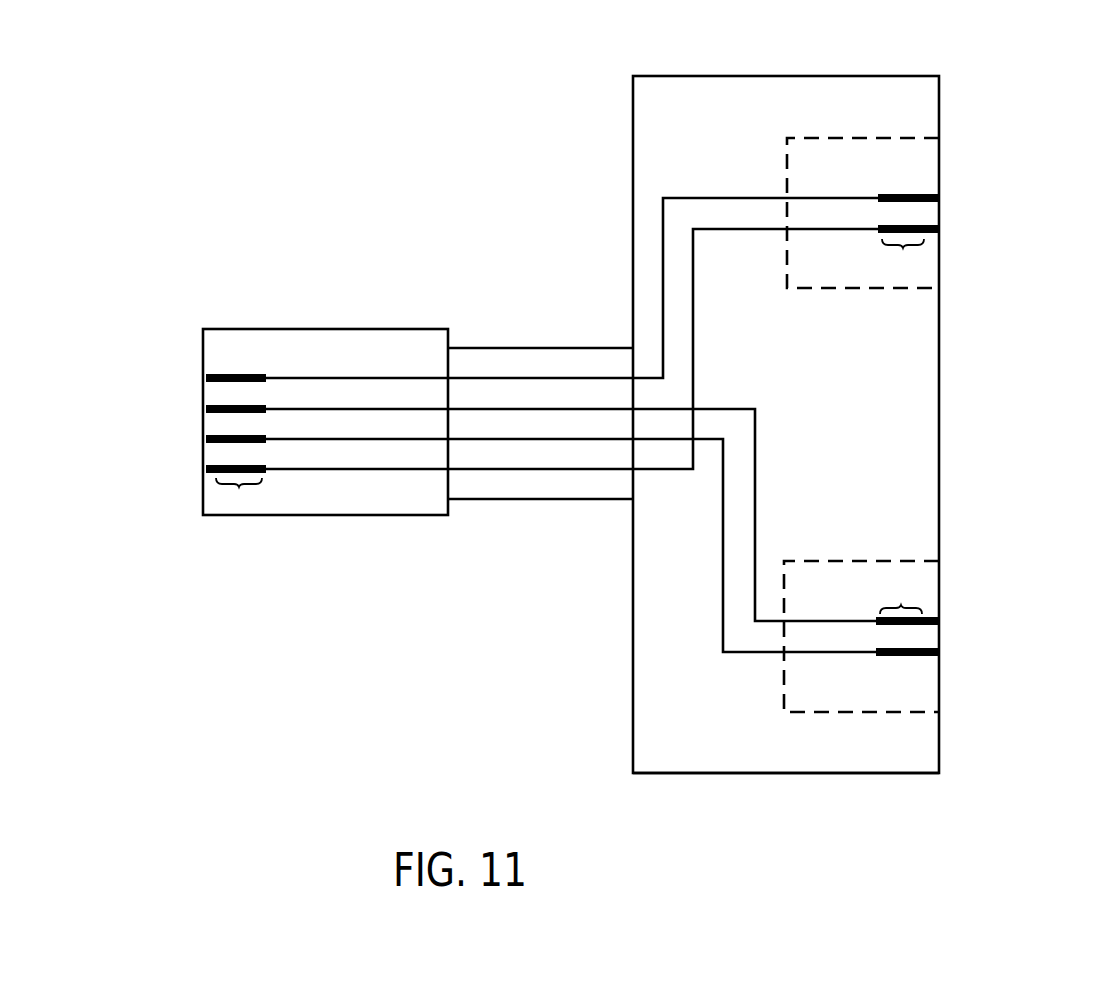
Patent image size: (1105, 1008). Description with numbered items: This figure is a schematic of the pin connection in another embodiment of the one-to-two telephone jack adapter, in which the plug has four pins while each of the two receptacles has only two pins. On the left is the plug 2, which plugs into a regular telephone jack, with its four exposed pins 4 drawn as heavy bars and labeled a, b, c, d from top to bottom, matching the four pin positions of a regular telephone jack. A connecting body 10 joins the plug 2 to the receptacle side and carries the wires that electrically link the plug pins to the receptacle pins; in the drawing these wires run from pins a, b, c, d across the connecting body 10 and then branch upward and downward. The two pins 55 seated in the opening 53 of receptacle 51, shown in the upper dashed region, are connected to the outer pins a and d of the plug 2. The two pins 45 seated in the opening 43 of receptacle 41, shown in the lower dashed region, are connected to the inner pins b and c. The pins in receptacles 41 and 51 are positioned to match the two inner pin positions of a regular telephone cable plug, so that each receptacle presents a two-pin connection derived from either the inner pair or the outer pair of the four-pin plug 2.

The plug 2 is at (326, 345).
The exposed pins 4 is at (240, 487).
The pin position a is at (201, 379).
The pin position b is at (201, 410).
The pin position c is at (201, 440).
The pin position d is at (201, 470).
The connecting body 10 is at (545, 487).
The receptacle 51 is at (846, 83).
The opening 53 is at (905, 146).
The pins 55 is at (905, 250).
The pins 45 is at (903, 610).
The opening 43 is at (902, 703).
The receptacle 41 is at (840, 766).